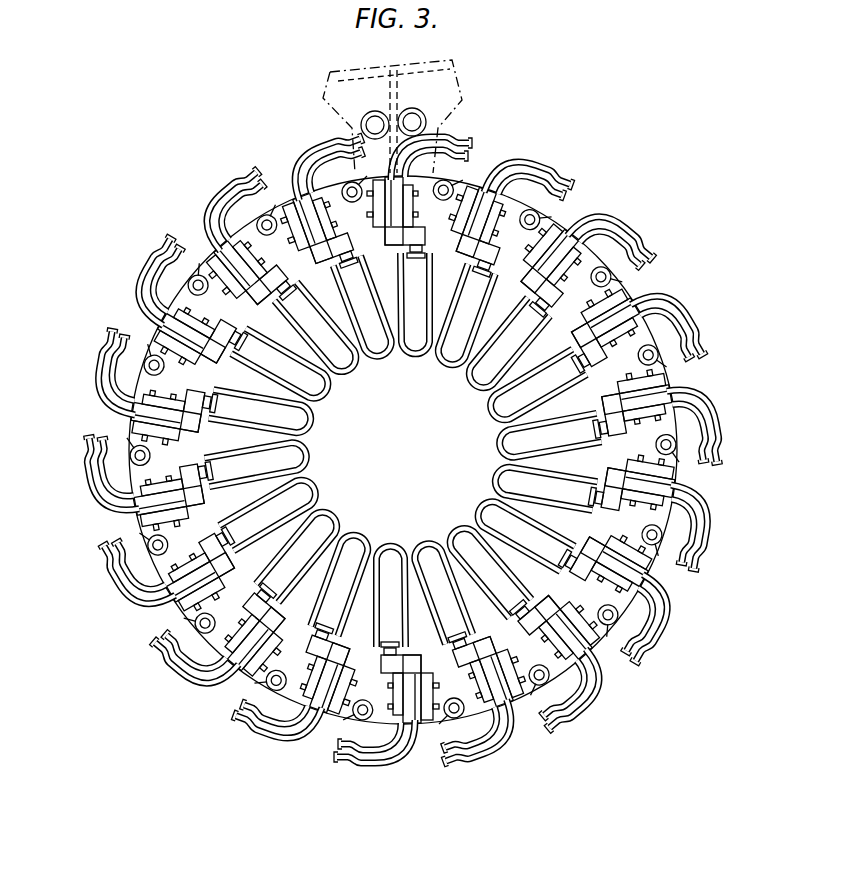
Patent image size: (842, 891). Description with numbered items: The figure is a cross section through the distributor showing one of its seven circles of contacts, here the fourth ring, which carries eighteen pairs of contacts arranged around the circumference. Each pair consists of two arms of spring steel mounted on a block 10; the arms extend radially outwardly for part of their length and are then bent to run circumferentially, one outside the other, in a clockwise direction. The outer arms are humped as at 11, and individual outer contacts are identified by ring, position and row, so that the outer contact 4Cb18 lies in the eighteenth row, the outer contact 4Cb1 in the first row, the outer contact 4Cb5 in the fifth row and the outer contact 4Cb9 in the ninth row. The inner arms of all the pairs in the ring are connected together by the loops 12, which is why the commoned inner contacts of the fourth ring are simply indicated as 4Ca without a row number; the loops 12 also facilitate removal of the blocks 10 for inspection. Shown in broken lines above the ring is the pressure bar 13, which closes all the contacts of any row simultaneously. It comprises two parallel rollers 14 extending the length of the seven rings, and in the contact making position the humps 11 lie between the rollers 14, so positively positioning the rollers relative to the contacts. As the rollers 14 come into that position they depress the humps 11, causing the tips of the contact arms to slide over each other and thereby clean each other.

The block 10 is at (403, 450).
The hump 11 is at (403, 449).
The loop 12 is at (402, 450).
The pressure bar 13 is at (447, 82).
The roller 14 is at (369, 112).
The commoned inner contacts of the fourth ring 4Ca is at (440, 163).
The outer contact of the fourth ring, eighteenth row 4Cb18 is at (465, 143).
The outer contact of the fourth ring, first row 4Cb1 is at (555, 186).
The outer contact of the fourth ring, fifth row 4Cb5 is at (651, 627).
The outer contact of the fourth ring, ninth row 4Cb9 is at (368, 766).